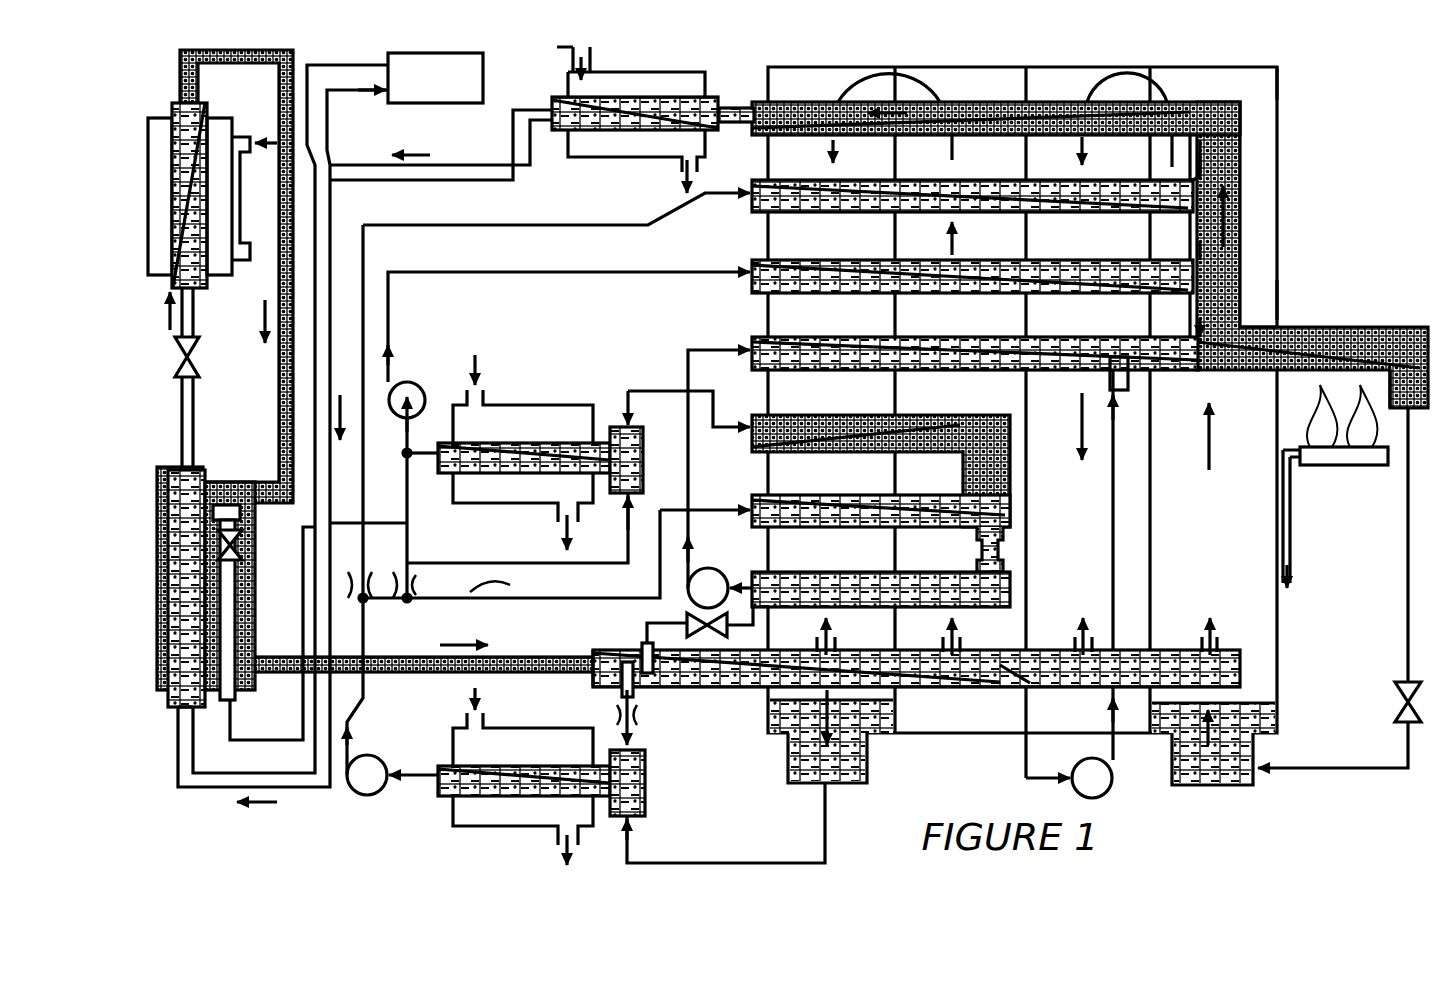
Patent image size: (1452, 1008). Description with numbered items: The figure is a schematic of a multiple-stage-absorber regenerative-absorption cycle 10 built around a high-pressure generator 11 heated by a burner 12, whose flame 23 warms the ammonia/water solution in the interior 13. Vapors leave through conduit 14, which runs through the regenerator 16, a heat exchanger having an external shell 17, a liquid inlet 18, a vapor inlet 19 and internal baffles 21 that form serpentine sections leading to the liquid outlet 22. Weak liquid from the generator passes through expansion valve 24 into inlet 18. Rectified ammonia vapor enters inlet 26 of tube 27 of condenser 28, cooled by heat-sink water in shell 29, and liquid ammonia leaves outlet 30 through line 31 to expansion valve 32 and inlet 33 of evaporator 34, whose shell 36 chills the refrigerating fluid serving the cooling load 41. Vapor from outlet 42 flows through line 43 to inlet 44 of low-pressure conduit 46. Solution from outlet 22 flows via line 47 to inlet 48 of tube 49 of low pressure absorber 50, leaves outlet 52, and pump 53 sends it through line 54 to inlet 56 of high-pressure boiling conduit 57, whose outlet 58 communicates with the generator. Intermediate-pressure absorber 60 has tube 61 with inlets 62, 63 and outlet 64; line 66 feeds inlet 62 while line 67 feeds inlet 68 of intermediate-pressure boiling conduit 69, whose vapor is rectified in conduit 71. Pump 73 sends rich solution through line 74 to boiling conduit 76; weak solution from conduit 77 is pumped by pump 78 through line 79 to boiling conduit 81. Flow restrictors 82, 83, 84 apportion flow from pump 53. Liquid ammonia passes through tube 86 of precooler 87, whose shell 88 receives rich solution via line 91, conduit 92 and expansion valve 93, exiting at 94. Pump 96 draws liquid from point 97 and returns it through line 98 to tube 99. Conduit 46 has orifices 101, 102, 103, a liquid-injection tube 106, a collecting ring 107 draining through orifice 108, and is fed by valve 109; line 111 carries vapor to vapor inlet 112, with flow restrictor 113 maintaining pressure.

The multiple-stage-absorber regenerative-absorption cycle 10 is at (1332, 172).
The high-pressure generator 11 is at (1393, 322).
The burner 12 is at (1357, 470).
The interior of generator 13 is at (1372, 330).
The conduit 14 is at (1005, 100).
The regenerator 16 is at (1290, 257).
The external shell 17 is at (1282, 298).
The liquid inlet 18 is at (1257, 773).
The vapor inlet 19 is at (1220, 643).
The internal baffles 21 is at (900, 395).
The liquid outlet 22 is at (835, 783).
The liquid outlet 23 is at (1362, 445).
The expansion valve 24 is at (1395, 702).
The inlet 26 is at (718, 97).
The tube 27 is at (655, 100).
The condenser 28 is at (578, 163).
The shell 29 is at (660, 165).
The condenser outlet 30 is at (550, 100).
The line 31 is at (493, 165).
The expansion valve 32 is at (200, 358).
The inlet 33 is at (200, 296).
The evaporator 34 is at (243, 190).
The evaporator shell 36 is at (236, 216).
The cooling load 41 is at (430, 110).
The outlet 42 is at (207, 107).
The line 43 is at (280, 392).
The inlet 44 is at (582, 650).
The low-pressure conduit 46 is at (748, 690).
The line 47 is at (795, 862).
The liquid inlet 48 is at (648, 815).
The tube 49 is at (530, 764).
The low pressure absorber 50 is at (515, 843).
The outlet 52 is at (437, 778).
The pump 53 is at (380, 758).
The line 54 is at (417, 225).
The inlet 56 is at (745, 200).
The high-pressure boiling conduit 57 is at (885, 178).
The outlet 58 is at (1192, 212).
The intermediate-pressure absorber 60 is at (562, 400).
The tube 61 is at (538, 442).
The liquid inlet 62 is at (636, 490).
The vapor inlet 63 is at (636, 425).
The outlet 64 is at (420, 465).
The line 66 is at (530, 562).
The line 67 is at (610, 598).
The inlet 68 is at (748, 510).
The intermediate-pressure boiling conduit 69 is at (862, 493).
The conduit 71 is at (860, 413).
The pump 73 is at (413, 385).
The line 74 is at (560, 270).
The high-pressure boiling conduit 76 is at (872, 258).
The conduit 77 is at (860, 572).
The pump 78 is at (710, 568).
The line 79 is at (685, 350).
The high-pressure boiling conduit 81 is at (857, 336).
The flow restrictor 82 is at (378, 575).
The flow restrictor 83 is at (418, 585).
The flow restrictor 84 is at (504, 580).
The tube 86 is at (205, 467).
The precooler 87 is at (236, 478).
The shell 88 is at (255, 647).
The line 91 is at (404, 492).
The conduit 92 is at (240, 600).
The expansion valve 93 is at (243, 560).
The exit 94 is at (250, 527).
The pump 96 is at (1115, 778).
The point 97 is at (1022, 755).
The line 98 is at (1112, 505).
The tube 99 is at (1126, 392).
The orifice 101 is at (840, 640).
The orifice 102 is at (962, 645).
The orifice 103 is at (1075, 645).
The tube 106 is at (655, 680).
The collecting ring 107 is at (1045, 683).
The orifice 108 is at (1020, 680).
The valve 109 is at (685, 625).
The line 111 is at (618, 683).
The vapor inlet 112 is at (640, 748).
The flow restrictor 113 is at (645, 718).